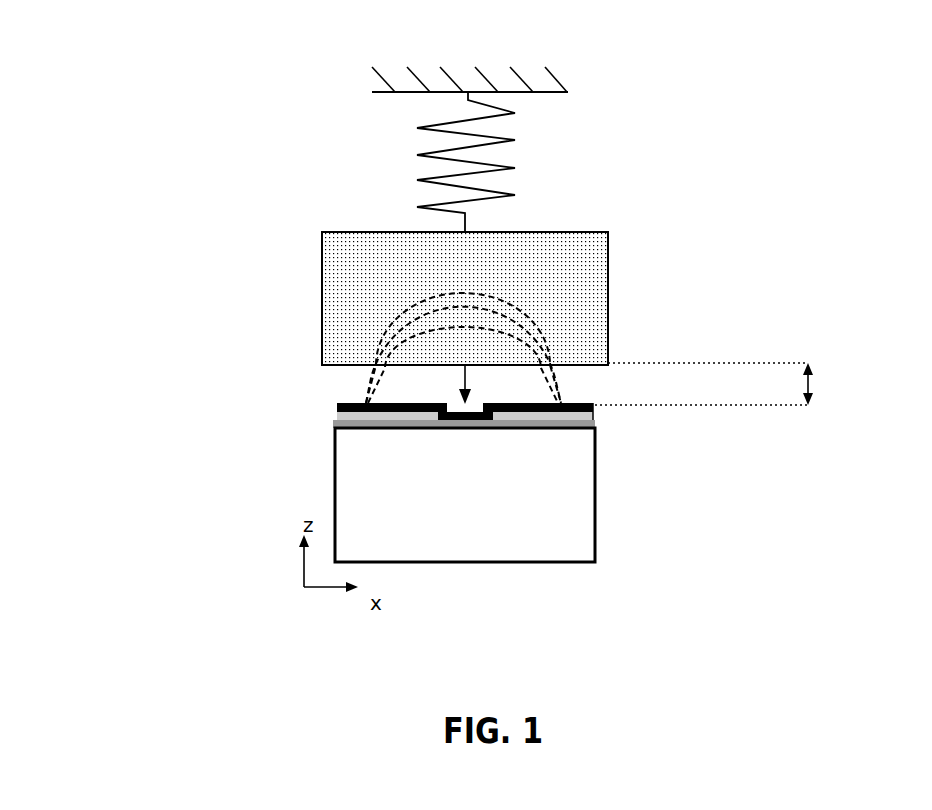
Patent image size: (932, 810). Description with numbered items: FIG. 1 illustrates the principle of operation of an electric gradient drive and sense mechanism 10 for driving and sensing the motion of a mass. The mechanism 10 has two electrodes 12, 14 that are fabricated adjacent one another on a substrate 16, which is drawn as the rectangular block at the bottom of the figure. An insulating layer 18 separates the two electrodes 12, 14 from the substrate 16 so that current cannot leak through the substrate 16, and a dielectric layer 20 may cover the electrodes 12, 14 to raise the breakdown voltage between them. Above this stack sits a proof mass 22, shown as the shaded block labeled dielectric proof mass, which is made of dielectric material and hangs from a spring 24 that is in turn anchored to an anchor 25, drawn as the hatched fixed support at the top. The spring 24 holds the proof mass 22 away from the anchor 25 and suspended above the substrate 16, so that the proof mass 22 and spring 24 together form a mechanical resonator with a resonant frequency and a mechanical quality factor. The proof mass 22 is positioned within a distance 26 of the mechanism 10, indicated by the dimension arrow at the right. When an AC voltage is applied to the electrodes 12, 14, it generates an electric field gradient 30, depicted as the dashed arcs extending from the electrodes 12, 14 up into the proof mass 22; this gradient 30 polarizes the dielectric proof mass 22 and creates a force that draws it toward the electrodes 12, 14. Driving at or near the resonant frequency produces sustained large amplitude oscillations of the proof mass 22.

The electric gradient drive and sense mechanism 10 is at (598, 479).
The electrode 12 is at (590, 412).
The electrode 14 is at (337, 415).
The substrate 16 is at (570, 540).
The insulating layer 18 is at (337, 427).
The dielectric layer 20 is at (337, 407).
The proof mass 22 is at (592, 302).
The spring 24 is at (515, 168).
The anchor 25 is at (568, 90).
The distance 26 is at (815, 385).
The electric field gradient 30 is at (563, 376).